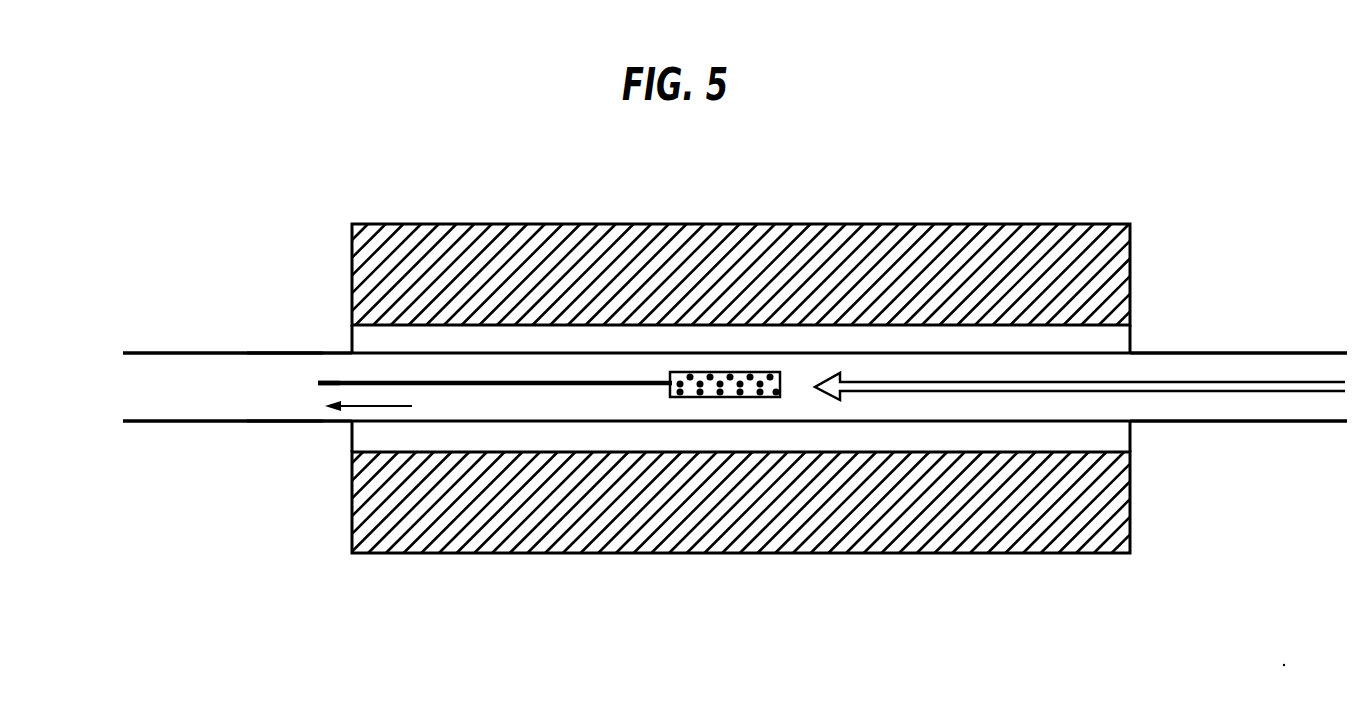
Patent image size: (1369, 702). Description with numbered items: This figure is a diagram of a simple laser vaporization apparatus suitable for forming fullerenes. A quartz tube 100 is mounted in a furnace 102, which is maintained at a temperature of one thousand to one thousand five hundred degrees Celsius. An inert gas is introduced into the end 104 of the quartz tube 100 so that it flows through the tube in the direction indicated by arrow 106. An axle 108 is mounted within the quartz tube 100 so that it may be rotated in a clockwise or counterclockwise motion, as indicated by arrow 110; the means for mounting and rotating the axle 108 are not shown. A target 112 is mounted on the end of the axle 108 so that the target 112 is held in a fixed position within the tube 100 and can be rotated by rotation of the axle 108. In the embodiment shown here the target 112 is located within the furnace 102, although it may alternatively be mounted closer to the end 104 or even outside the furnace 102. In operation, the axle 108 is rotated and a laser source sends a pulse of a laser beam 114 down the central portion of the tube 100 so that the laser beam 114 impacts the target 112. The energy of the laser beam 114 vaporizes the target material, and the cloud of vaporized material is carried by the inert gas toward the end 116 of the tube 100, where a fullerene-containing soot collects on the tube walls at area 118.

The quartz tube 100 is at (635, 423).
The furnace 102 is at (883, 224).
The end of tube 104 is at (1320, 430).
The arrow 106 is at (372, 406).
The axle 108 is at (320, 387).
The arrow 110 is at (301, 377).
The target 112 is at (765, 398).
The laser beam 114 is at (1171, 380).
The end of tube 116 is at (138, 347).
The area 118 is at (247, 332).